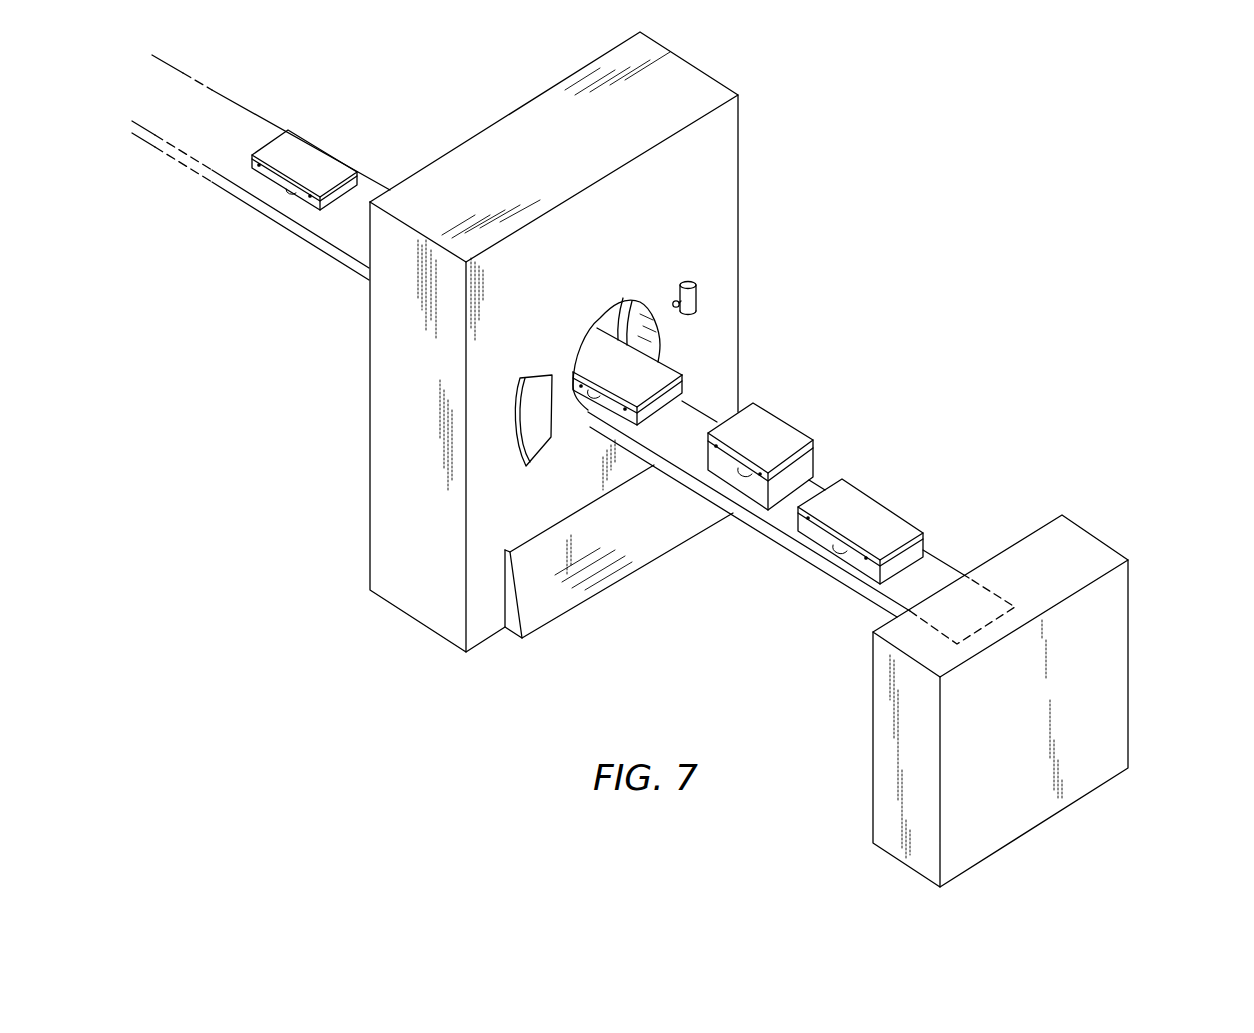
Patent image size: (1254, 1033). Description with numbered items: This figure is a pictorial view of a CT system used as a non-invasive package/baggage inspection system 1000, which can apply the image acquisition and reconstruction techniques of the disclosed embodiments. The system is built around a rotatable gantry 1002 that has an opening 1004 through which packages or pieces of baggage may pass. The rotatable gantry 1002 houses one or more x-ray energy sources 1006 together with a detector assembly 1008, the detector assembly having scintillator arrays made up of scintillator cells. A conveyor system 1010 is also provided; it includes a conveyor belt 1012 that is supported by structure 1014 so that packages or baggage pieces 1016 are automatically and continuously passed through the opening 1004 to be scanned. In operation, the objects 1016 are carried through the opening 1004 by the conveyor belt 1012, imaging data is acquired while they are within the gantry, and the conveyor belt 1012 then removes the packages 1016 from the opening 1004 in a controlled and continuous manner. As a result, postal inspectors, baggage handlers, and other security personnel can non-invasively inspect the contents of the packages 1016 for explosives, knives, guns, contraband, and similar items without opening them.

The package/baggage inspection system 1000 is at (882, 358).
The rotatable gantry 1002 is at (696, 214).
The opening 1004 is at (637, 302).
The x-ray energy source 1006 is at (702, 299).
The detector assembly 1008 is at (537, 372).
The conveyor system 1010 is at (148, 163).
The conveyor belt 1012 is at (342, 232).
The structure 1014 is at (1116, 653).
The packages or baggage pieces 1016 is at (315, 155).